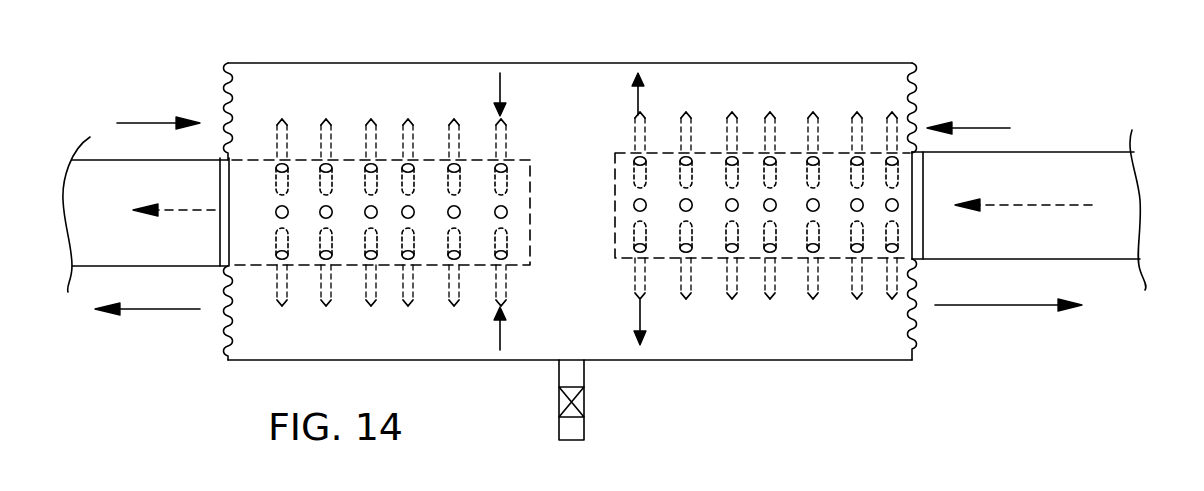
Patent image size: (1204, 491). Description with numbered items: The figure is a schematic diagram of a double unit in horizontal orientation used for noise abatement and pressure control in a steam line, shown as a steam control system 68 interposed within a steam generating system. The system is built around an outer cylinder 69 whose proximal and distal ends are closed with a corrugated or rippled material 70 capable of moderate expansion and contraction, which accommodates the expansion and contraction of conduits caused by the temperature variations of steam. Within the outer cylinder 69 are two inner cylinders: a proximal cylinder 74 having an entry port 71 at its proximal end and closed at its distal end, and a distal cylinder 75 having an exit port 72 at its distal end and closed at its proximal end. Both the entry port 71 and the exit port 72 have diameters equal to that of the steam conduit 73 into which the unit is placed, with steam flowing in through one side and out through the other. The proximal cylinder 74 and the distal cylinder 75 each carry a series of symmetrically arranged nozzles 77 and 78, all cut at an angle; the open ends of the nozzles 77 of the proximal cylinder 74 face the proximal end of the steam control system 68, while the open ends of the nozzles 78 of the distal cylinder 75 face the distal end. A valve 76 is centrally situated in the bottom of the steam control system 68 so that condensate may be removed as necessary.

The steam control system 68 is at (860, 42).
The outer cylinder 69 is at (290, 63).
The corrugated or rippled material 70 is at (222, 78).
The entry port 71 is at (915, 180).
The exit port 72 is at (228, 268).
The steam conduit 73 is at (1085, 152).
The proximal cylinder 74 is at (745, 258).
The distal cylinder 75 is at (405, 265).
The valve 76 is at (559, 378).
The nozzles 77 is at (680, 298).
The nozzles 78 is at (330, 298).